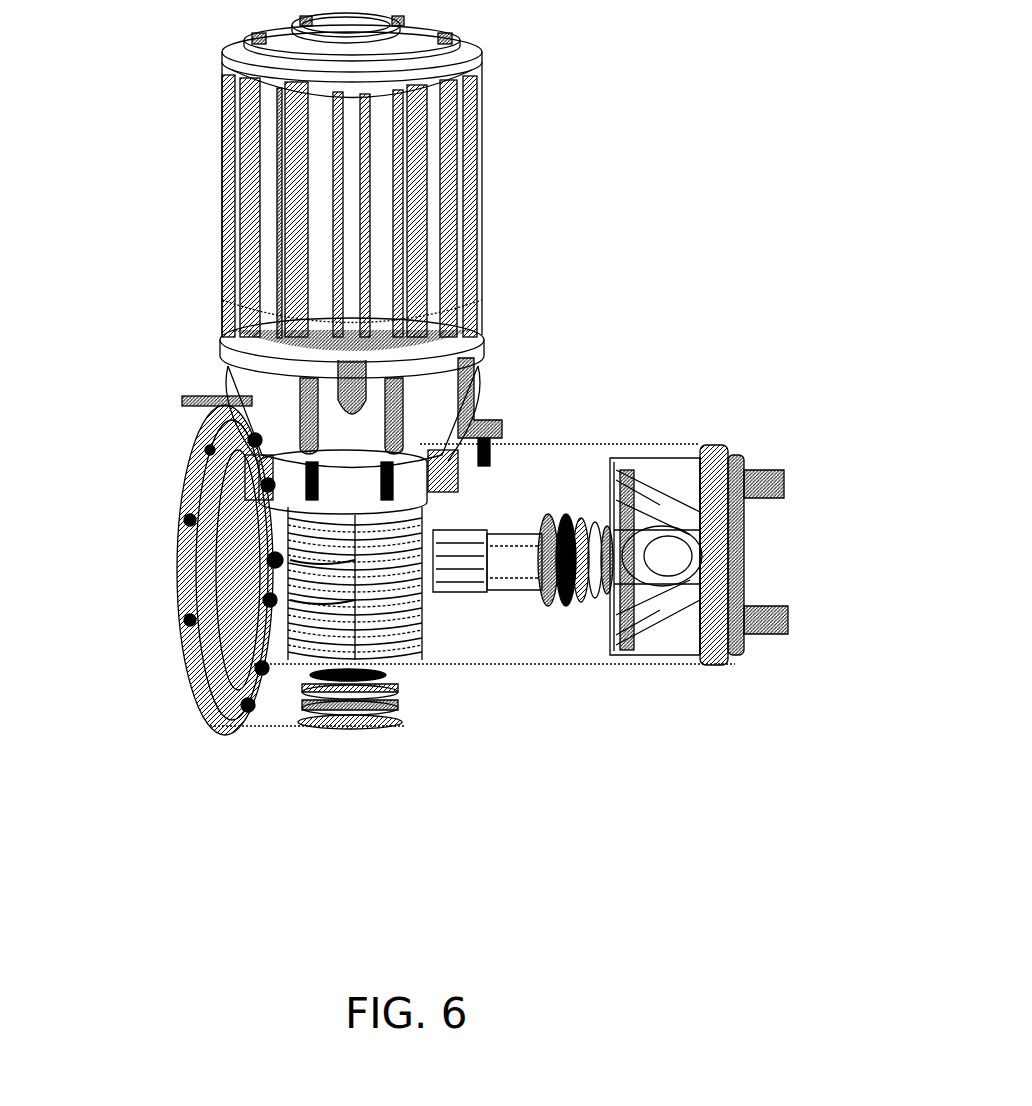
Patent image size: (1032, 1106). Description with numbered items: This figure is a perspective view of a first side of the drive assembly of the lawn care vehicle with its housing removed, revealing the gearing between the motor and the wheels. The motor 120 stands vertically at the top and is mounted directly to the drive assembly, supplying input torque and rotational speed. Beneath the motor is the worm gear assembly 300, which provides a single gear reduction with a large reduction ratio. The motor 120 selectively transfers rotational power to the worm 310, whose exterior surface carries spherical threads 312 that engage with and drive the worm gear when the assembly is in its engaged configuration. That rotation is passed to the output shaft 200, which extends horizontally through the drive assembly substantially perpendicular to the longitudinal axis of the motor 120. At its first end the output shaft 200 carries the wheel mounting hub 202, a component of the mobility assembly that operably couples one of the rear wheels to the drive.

The motor 120 is at (268, 288).
The output shaft 200 is at (500, 549).
The wheel mounting hub 202 is at (742, 487).
The worm gear assembly 300 is at (342, 726).
The worm 310 is at (398, 618).
The spherical threads 312 is at (315, 627).